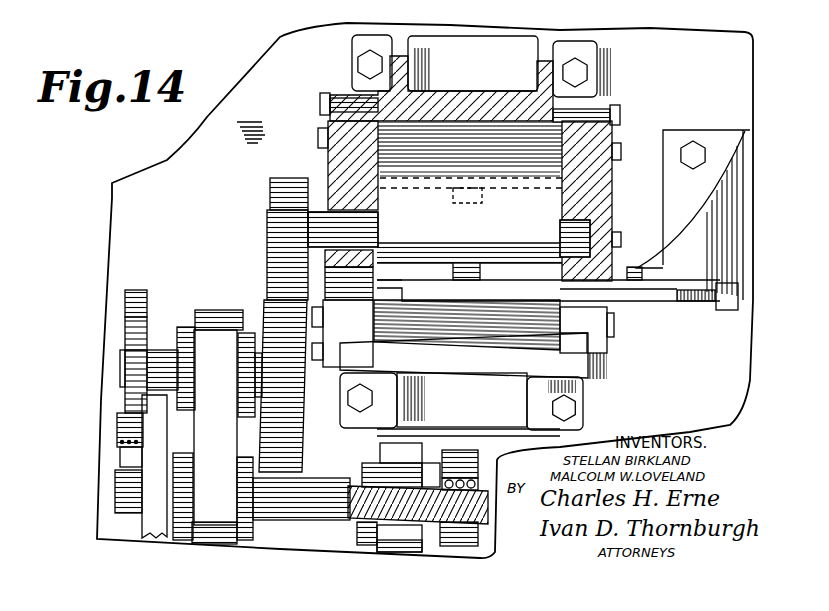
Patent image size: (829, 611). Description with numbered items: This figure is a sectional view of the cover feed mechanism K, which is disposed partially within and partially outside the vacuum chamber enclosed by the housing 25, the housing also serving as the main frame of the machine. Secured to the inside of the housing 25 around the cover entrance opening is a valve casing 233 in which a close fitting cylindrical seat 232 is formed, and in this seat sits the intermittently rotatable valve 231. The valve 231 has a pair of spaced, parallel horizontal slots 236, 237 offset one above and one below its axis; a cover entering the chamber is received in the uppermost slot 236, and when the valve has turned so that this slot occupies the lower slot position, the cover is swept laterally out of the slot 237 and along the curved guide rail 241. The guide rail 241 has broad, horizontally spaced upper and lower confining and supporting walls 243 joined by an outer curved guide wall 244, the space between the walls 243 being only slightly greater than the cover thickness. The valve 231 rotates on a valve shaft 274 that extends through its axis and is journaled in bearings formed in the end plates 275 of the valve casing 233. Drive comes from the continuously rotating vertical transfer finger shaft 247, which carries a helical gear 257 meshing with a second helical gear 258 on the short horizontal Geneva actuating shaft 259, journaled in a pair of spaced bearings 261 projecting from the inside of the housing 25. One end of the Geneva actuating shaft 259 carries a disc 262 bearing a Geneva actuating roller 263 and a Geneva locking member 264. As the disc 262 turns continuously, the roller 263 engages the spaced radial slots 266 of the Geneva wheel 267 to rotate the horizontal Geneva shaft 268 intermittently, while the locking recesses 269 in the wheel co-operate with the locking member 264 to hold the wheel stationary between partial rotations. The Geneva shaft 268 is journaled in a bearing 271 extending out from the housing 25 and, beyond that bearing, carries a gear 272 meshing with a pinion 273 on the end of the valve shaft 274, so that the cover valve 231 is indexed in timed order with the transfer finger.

The housing 25 is at (122, 211).
The cover feed mechanism K is at (128, 235).
The cylindrical seat 232 is at (475, 118).
The valve casing 233 is at (565, 100).
The intermittently rotatable valve 231 is at (614, 136).
The end plates 275 is at (342, 128).
The valve shaft 274 is at (318, 222).
The horizontal slot 236 is at (493, 195).
The horizontal slot 237 is at (409, 274).
The upper and lower confining and supporting walls 243 is at (652, 303).
The curved guide rail 241 is at (684, 309).
The outer curved guide wall 244 is at (733, 310).
The pinion 273 is at (272, 195).
The gear 272 is at (277, 292).
The bearing 271 is at (211, 340).
The Geneva shaft 268 is at (158, 358).
The radial slots 266 is at (122, 311).
The locking recesses 269 is at (122, 336).
The Geneva wheel 267 is at (130, 368).
The Geneva actuating roller 263 is at (128, 430).
The Geneva locking member 264 is at (128, 463).
The disc 262 is at (148, 519).
The Geneva actuating shaft 259 is at (312, 497).
The helical gear 257 is at (367, 507).
The bearings 261 is at (395, 479).
The second helical gear 258 is at (471, 458).
The transfer finger shaft 247 is at (453, 477).